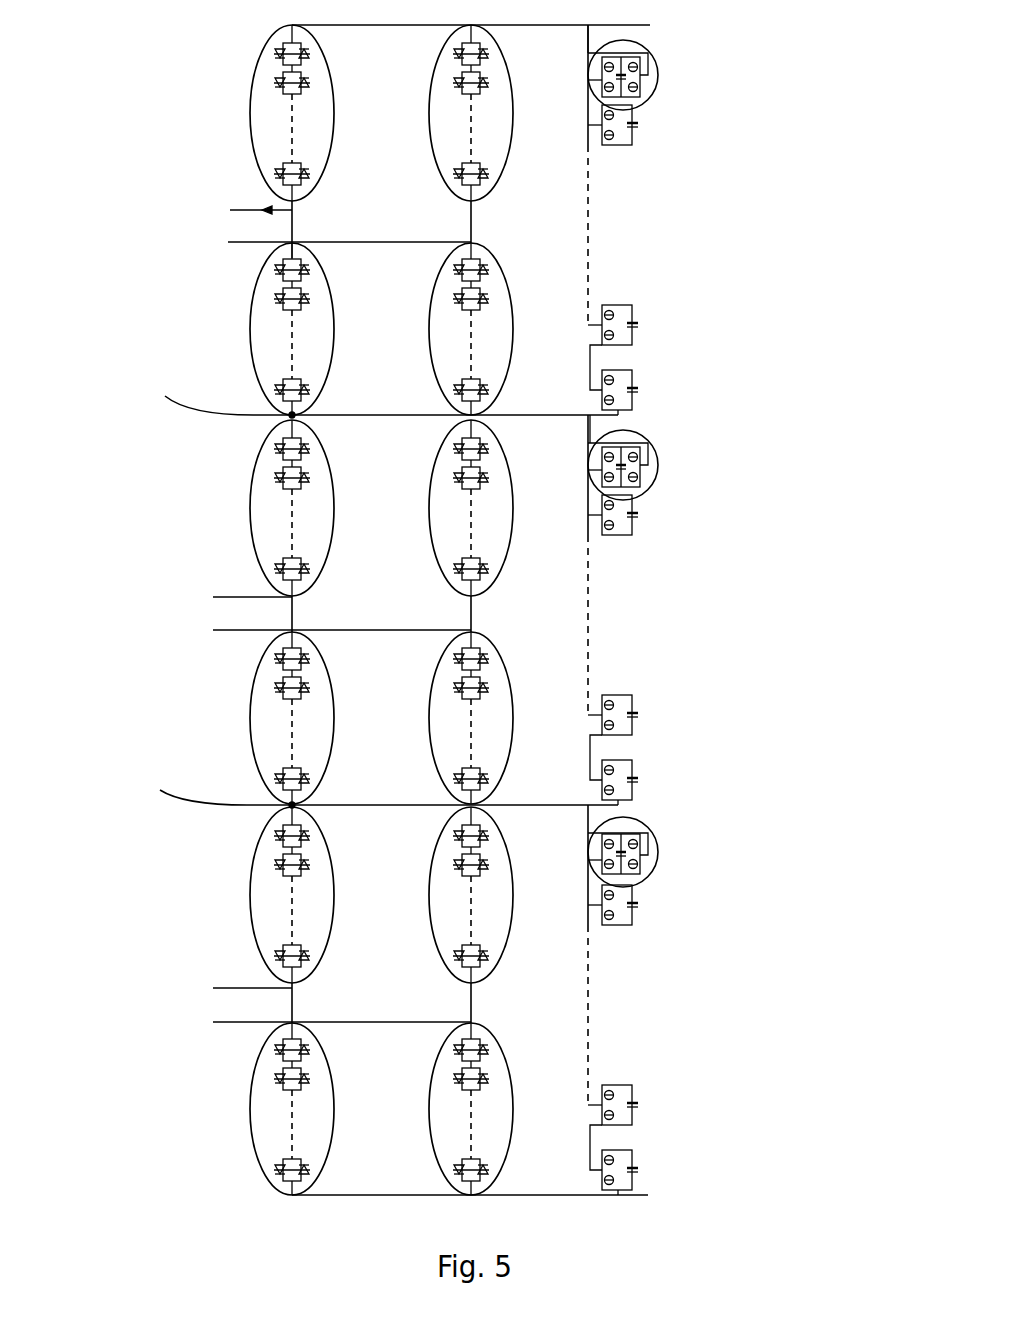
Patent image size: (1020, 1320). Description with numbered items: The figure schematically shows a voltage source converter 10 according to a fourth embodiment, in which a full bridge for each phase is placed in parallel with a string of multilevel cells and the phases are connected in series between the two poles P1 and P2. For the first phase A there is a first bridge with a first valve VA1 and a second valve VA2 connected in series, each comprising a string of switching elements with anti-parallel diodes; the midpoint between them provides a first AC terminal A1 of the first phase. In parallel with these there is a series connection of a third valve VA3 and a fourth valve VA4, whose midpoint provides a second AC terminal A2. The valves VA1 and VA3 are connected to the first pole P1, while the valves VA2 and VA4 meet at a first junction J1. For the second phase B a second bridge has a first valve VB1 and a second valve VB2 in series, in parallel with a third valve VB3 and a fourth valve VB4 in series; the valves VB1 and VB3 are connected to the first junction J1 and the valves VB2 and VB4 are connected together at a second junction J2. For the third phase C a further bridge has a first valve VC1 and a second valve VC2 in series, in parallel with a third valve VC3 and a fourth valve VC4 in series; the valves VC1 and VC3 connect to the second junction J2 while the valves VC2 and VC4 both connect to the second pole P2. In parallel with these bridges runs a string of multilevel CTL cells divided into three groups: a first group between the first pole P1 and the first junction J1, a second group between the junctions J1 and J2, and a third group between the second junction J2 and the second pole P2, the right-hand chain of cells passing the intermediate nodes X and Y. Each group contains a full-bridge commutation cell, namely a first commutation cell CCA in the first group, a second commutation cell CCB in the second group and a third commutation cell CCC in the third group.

The modular multilevel converter 10 is at (164, 95).
The first valve of the first bridge VA1 is at (253, 80).
The second valve of the first bridge VA2 is at (253, 298).
The third valve of the first bridge VA3 is at (432, 78).
The fourth valve of the first bridge VA4 is at (432, 297).
The first valve of the second bridge VB1 is at (252, 480).
The second valve of the second bridge VB2 is at (252, 686).
The third valve of the second bridge VB3 is at (431, 480).
The fourth valve of the second bridge VB4 is at (431, 686).
The first valve of the third bridge VC1 is at (252, 866).
The second valve of the third bridge VC2 is at (252, 1080).
The third valve of the third bridge VC3 is at (431, 866).
The fourth valve of the third bridge VC4 is at (431, 1080).
The first commutation cell CCA is at (660, 85).
The second commutation cell CCB is at (660, 475).
The third commutation cell CCC is at (660, 860).
The first junction J1 is at (386, 391).
The second junction J2 is at (384, 785).
The first pole P1 is at (494, 20).
The second pole P2 is at (486, 1195).
The AC phase terminal A is at (346, 226).
The AC phase terminal B is at (341, 613).
The AC phase terminal C is at (341, 1005).
The first AC terminal of the first AC phase A1 is at (257, 204).
The second AC terminal of the first phase A2 is at (260, 255).
The node X is at (575, 39).
The node Y is at (581, 420).